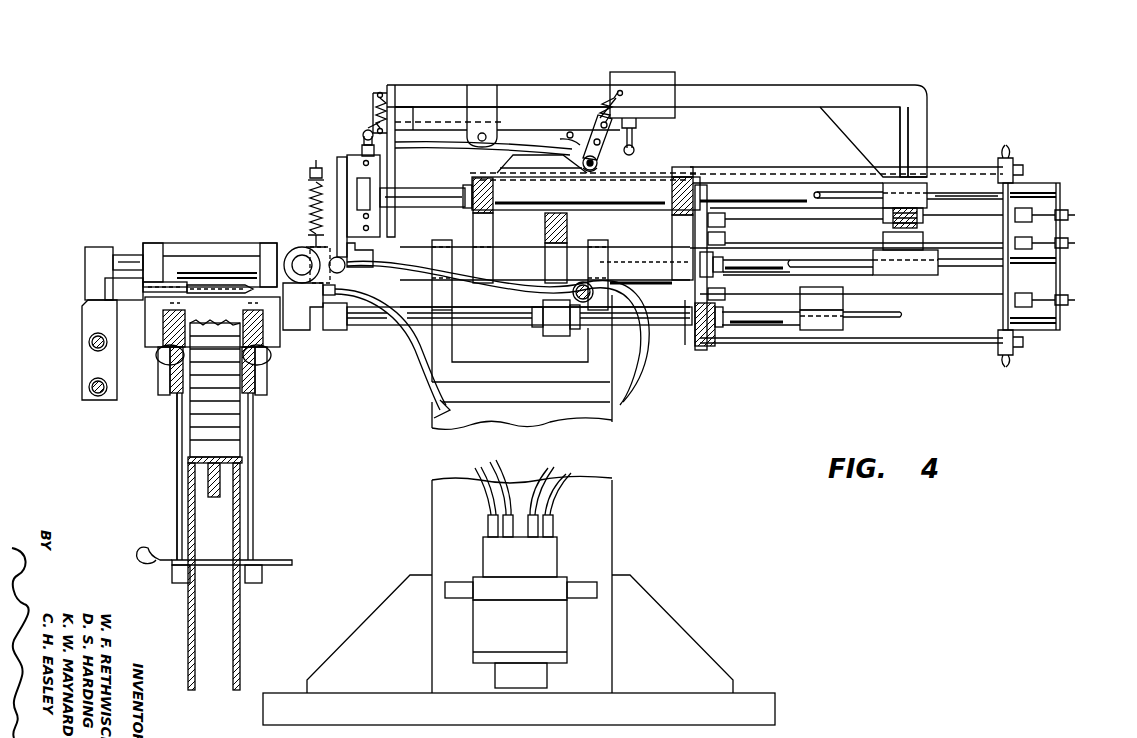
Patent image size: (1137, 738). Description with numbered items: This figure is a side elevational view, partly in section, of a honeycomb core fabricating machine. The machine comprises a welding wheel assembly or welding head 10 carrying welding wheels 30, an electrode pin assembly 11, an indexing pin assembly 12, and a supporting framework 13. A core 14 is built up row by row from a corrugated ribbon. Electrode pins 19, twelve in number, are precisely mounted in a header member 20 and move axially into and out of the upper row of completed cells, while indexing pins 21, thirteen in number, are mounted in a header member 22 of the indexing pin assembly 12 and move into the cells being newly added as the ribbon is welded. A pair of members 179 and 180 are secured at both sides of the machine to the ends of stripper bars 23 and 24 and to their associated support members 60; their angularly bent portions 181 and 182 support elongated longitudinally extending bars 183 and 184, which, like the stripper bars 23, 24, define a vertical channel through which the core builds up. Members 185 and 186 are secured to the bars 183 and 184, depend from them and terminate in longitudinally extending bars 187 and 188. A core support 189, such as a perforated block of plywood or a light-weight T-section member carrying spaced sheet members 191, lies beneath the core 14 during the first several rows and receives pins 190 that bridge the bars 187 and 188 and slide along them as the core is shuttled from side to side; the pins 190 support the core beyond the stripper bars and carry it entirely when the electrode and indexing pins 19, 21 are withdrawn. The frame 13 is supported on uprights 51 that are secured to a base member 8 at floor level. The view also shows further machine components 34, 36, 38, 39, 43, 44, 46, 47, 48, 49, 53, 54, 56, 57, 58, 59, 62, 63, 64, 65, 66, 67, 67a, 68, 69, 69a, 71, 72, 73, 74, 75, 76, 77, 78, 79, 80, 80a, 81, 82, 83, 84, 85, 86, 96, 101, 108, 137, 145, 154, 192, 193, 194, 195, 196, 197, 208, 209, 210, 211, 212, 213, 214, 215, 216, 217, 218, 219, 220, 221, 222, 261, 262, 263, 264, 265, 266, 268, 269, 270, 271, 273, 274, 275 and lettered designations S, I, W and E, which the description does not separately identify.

The base member 8 is at (778, 712).
The welding wheel assembly 10 is at (406, 234).
The electrode pin assembly 11 is at (325, 340).
The indexing pin assembly 12 is at (100, 284).
The supporting framework 13 is at (461, 344).
The core 14 is at (256, 452).
The electrode pins 19 is at (262, 300).
The header member 20 is at (310, 310).
The indexing pins 21 is at (232, 295).
The header member 22 is at (115, 298).
The stripper bar 23 is at (267, 312).
The stripper bar 24 is at (170, 320).
The welding wheels 30 is at (306, 257).
The connector 34 is at (567, 555).
The swivel 36 is at (342, 272).
The spring 38 is at (309, 218).
The plate 39 is at (337, 160).
The pin 43 is at (363, 134).
The block 44 is at (382, 172).
The cylinder 46 is at (236, 252).
The housing 47 is at (530, 347).
The rail 48 is at (608, 255).
The support block 49 is at (450, 250).
The uprights 51 is at (612, 552).
The rod 53 is at (780, 274).
The cylinder 54 is at (890, 275).
The bracket 56 is at (100, 290).
The screw 57 is at (90, 341).
The screw 58 is at (89, 388).
The bracket plate 59 is at (80, 354).
The support members 60 is at (160, 272).
The cable 62 is at (386, 328).
The block 63 is at (343, 328).
The block 64 is at (822, 330).
The block 65 is at (549, 333).
The plate 66 is at (700, 345).
The block 67 is at (545, 218).
The roller 67a is at (573, 296).
The block 68 is at (493, 250).
The block 69 is at (672, 236).
The bar 69a is at (693, 262).
The shaft 71 is at (435, 205).
The bracket 72 is at (92, 380).
The block 73 is at (912, 190).
The frame 74 is at (768, 92).
The frame post 75 is at (393, 120).
The frame post 76 is at (920, 132).
The lug 77 is at (490, 120).
The pivot 78 is at (478, 136).
The frame bar 79 is at (428, 122).
The lever 80 is at (368, 122).
The lever end 80a is at (364, 136).
The spring 81 is at (605, 120).
The pivot 82 is at (600, 164).
The cam 83 is at (605, 163).
The arm 84 is at (533, 156).
The cam 85 is at (510, 166).
The rail 86 is at (488, 172).
The cylinder cap 96 is at (157, 268).
The cable 101 is at (418, 358).
The cable 108 is at (653, 320).
The washer 137 is at (310, 190).
The nut 145 is at (310, 177).
The bracket 154 is at (362, 150).
The member 179 is at (270, 345).
The member 180 is at (150, 322).
The angularly bent portion 181 is at (263, 352).
The angularly bent portion 182 is at (165, 352).
The longitudinally extending bar 183 is at (248, 365).
The longitudinally extending bar 184 is at (175, 395).
The member 185 is at (253, 522).
The member 186 is at (177, 492).
The longitudinally extending bar 187 is at (252, 578).
The longitudinally extending bar 188 is at (172, 572).
The core support 189 is at (181, 601).
The pins 190 is at (140, 556).
The sheet members 191 is at (232, 595).
The box 192 is at (619, 90).
The lever 193 is at (590, 140).
The link 194 is at (598, 118).
The spring 195 is at (379, 105).
The link 196 is at (565, 134).
The pin 197 is at (637, 126).
The post 208 is at (852, 176).
The cap 209 is at (678, 168).
The rail 210 is at (908, 343).
The end plate 211 is at (1013, 183).
The end plate 212 is at (1033, 332).
The bolt 213 is at (1009, 260).
The plate 214 is at (1062, 282).
The bar 215 is at (1060, 192).
The rod 216 is at (988, 194).
The rod 217 is at (948, 180).
The rod 218 is at (820, 192).
The rod 219 is at (772, 325).
The rod 220 is at (898, 318).
The rod 221 is at (843, 268).
The rod 222 is at (948, 268).
The rod 261 is at (740, 218).
The gear 262 is at (912, 226).
The block 263 is at (713, 218).
The adjuster 264 is at (1061, 217).
The gear 265 is at (885, 222).
The rail 266 is at (770, 296).
The cylinder 268 is at (820, 300).
The plate 269 is at (690, 347).
The adjuster 270 is at (1062, 302).
The rod 271 is at (780, 242).
The block 273 is at (912, 250).
The plate 274 is at (697, 228).
The adjuster 275 is at (1061, 243).
The station S is at (74, 245).
The input I is at (121, 243).
The workpiece shaft W is at (433, 191).
The direction E is at (668, 331).